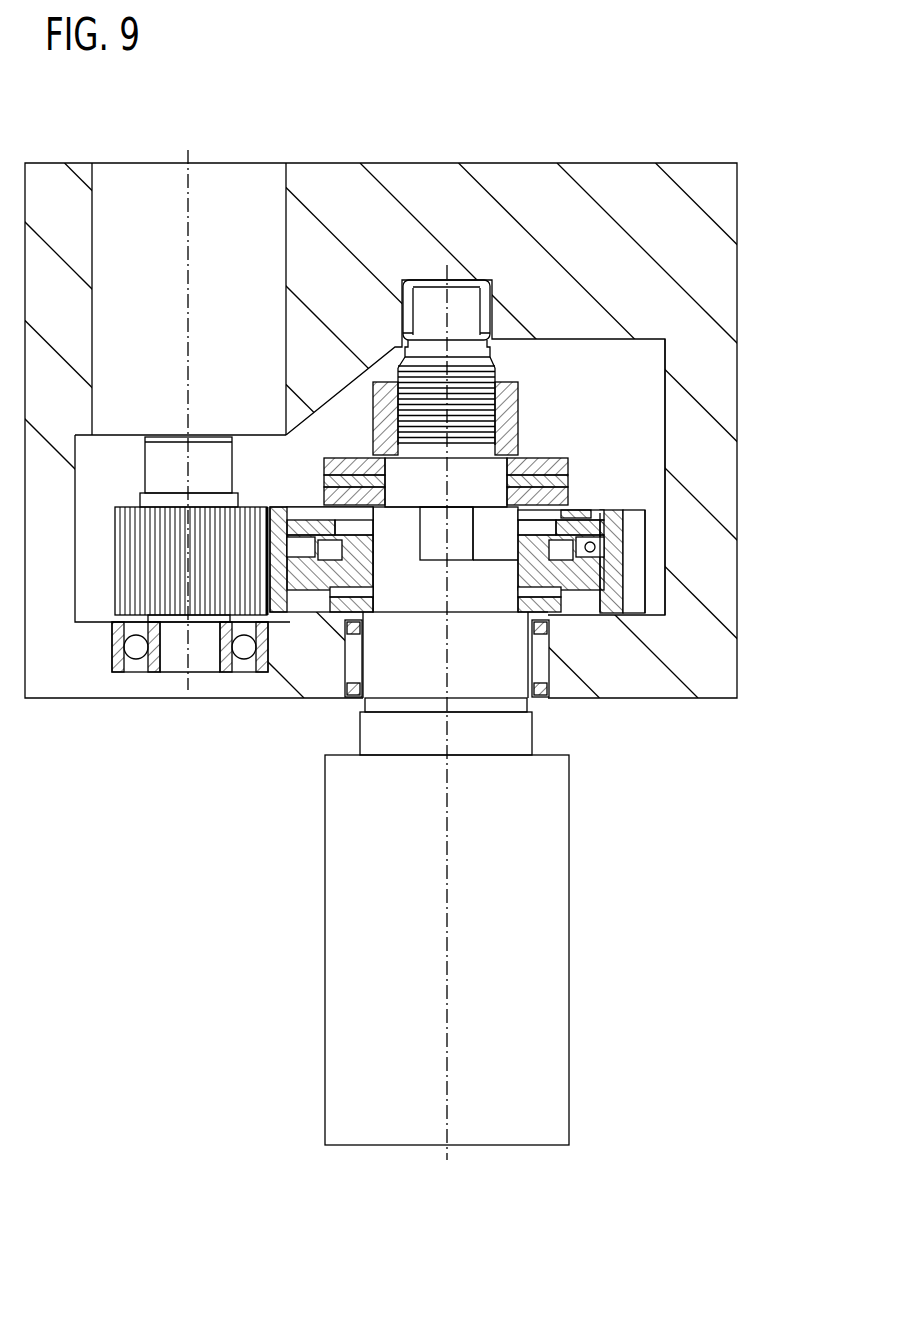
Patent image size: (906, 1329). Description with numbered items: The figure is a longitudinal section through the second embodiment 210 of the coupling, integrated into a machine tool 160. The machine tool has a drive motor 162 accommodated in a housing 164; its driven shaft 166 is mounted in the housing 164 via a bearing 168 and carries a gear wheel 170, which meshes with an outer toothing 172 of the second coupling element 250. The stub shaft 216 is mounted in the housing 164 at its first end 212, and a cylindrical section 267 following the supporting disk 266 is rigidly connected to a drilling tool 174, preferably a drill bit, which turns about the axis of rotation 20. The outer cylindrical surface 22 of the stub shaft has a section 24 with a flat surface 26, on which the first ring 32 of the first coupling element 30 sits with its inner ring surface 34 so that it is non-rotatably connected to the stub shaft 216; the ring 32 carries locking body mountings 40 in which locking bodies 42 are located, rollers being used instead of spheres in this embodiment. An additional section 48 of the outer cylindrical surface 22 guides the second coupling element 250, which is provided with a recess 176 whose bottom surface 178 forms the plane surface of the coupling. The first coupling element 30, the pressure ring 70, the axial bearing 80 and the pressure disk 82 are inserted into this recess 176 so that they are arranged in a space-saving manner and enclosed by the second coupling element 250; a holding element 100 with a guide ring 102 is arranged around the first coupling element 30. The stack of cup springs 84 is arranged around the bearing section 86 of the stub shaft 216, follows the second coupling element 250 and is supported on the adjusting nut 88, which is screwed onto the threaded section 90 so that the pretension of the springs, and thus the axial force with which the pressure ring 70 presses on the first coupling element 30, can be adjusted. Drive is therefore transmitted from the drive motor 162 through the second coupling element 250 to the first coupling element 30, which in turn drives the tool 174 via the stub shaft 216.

The machine tool 160 is at (629, 152).
The housing 164 is at (66, 190).
The drive motor 162 is at (257, 195).
The threaded section 90 is at (396, 400).
The first end 212 is at (460, 290).
The stub shaft 216 is at (519, 332).
The adjusting nut 88 is at (635, 332).
The second embodiment of the coupling 210 is at (648, 354).
The stack of cup springs 84 is at (586, 458).
The axial bearing 80 is at (605, 510).
The pressure ring 70 is at (626, 499).
The first coupling element 30 is at (640, 512).
The recess 176 is at (580, 545).
The holding element 100 is at (611, 565).
The guide ring 102 is at (560, 560).
The outer toothing 172 is at (640, 600).
The bearing section 86 is at (456, 494).
The flat surface 26 is at (425, 547).
The section 24 is at (480, 547).
The outer cylindrical surface 22 is at (420, 599).
The additional section 48 is at (480, 599).
The inner ring surface 34 is at (372, 545).
The pressure disk 82 is at (300, 507).
The first ring 32 is at (283, 620).
The second coupling element 250 is at (330, 561).
The supporting disk 266 is at (345, 640).
The cylindrical section 267 is at (520, 678).
The bottom surface 178 is at (560, 612).
The locking bodies 42 is at (585, 610).
The locking body mountings 40 is at (630, 615).
The driven shaft 166 is at (147, 460).
The gear wheel 170 is at (178, 605).
The bearing 168 is at (118, 660).
The axis of rotation 20 is at (452, 852).
The drilling tool 174 is at (328, 938).